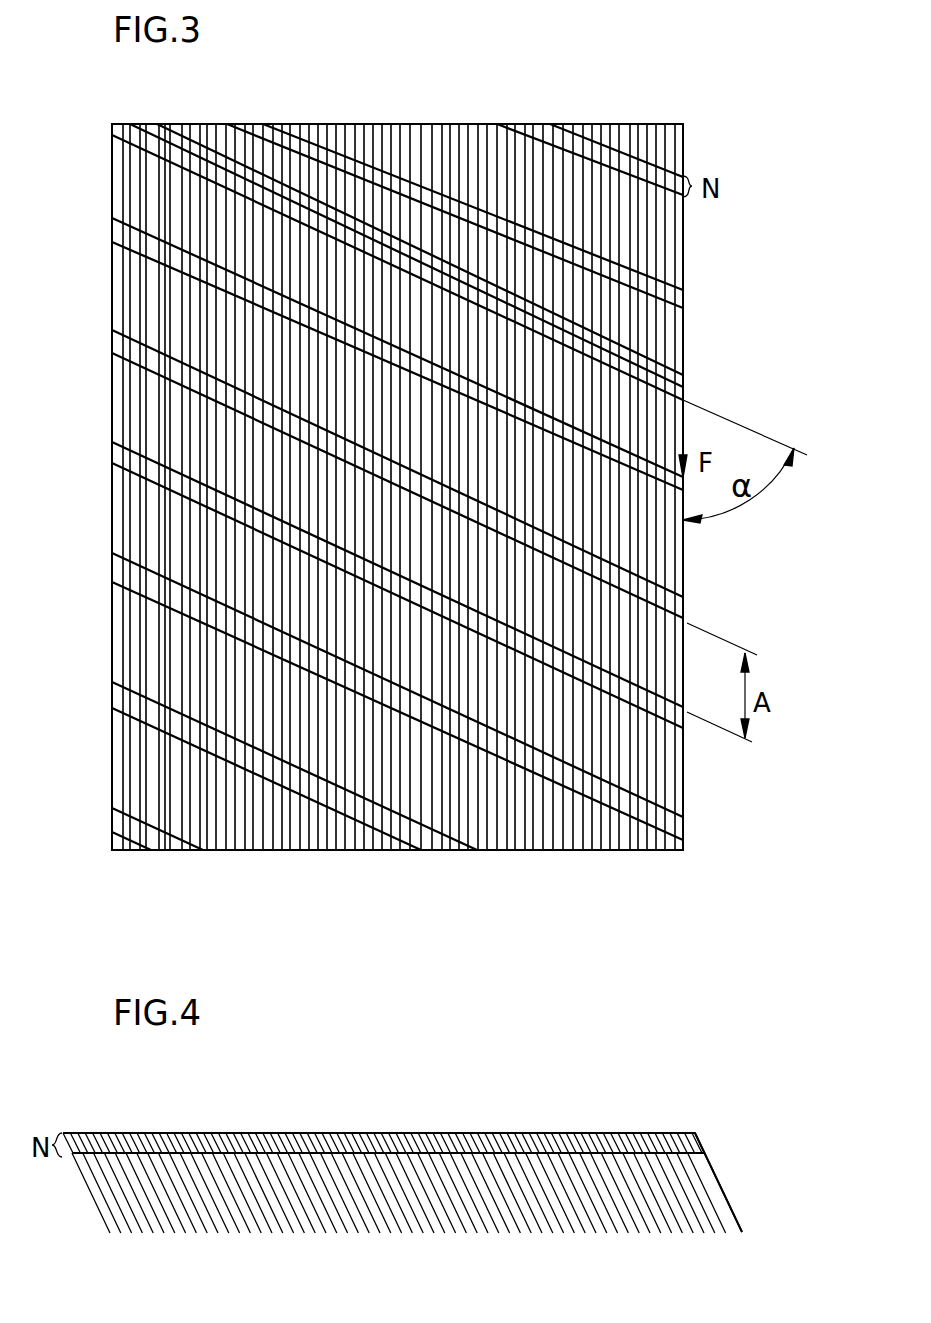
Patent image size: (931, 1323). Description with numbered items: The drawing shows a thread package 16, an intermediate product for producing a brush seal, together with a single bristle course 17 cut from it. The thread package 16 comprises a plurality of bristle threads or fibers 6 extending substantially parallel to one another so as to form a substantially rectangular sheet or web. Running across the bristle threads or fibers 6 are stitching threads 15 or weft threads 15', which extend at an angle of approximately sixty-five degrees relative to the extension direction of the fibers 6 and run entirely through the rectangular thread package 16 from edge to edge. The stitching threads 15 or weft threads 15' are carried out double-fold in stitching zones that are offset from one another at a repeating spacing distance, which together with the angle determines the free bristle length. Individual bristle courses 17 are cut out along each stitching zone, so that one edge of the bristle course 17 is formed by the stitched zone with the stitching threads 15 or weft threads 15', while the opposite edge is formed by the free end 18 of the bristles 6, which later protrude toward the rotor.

In FIG. 3, the bristle threads or fibers 6 is at (482, 125).
In FIG. 4, the bristle threads or fibers 6 is at (432, 1162).
In FIG. 3, the stitching threads 15 is at (468, 487).
In FIG. 4, the stitching threads 15 is at (446, 1124).
In FIG. 3, the weft threads 15' is at (425, 487).
In FIG. 4, the weft threads 15' is at (408, 1141).
In FIG. 3, the thread package 16 is at (728, 263).
In FIG. 4, the bristle course 17 is at (745, 1193).
In FIG. 4, the free end of the bristles 18 is at (742, 1232).